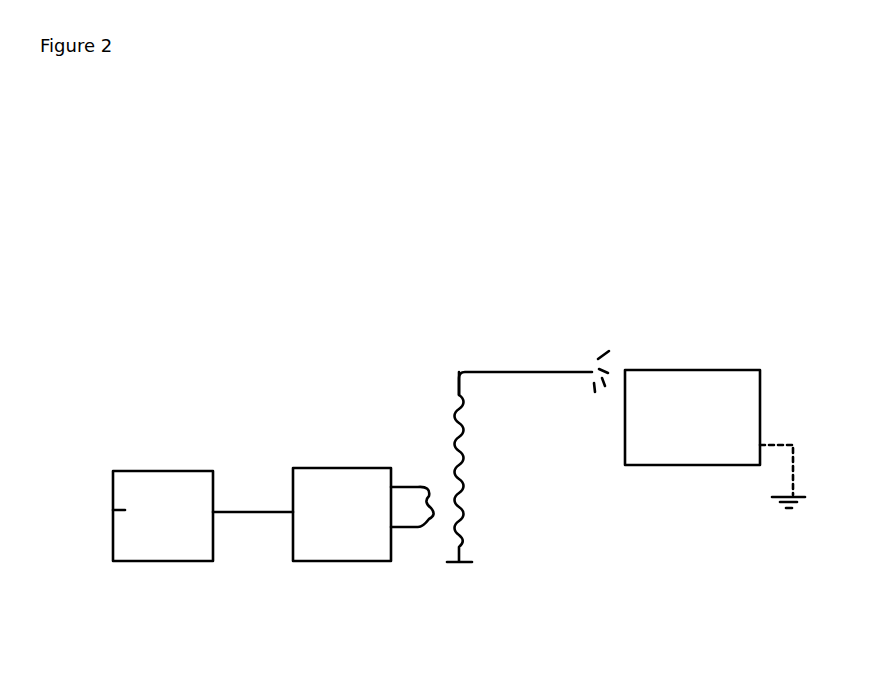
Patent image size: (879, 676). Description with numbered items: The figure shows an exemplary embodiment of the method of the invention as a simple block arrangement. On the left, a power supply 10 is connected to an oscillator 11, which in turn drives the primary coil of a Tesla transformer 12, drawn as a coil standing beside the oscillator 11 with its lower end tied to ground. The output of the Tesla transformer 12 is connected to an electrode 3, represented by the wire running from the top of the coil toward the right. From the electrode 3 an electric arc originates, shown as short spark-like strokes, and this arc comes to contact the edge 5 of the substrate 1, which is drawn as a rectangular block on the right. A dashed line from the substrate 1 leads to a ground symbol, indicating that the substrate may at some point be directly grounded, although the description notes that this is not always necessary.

The substrate 1 is at (650, 457).
The electrode 3 is at (563, 372).
The edge 5 is at (628, 363).
The power supply 10 is at (158, 551).
The oscillator 11 is at (333, 547).
The Tesla transformer 12 is at (437, 536).